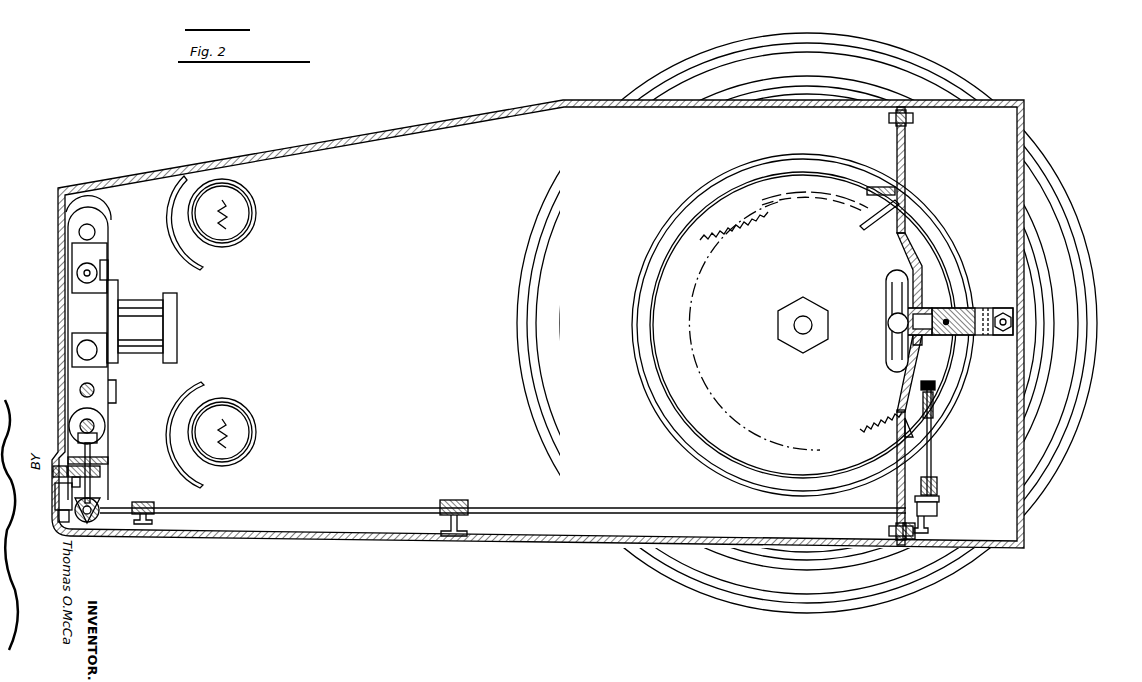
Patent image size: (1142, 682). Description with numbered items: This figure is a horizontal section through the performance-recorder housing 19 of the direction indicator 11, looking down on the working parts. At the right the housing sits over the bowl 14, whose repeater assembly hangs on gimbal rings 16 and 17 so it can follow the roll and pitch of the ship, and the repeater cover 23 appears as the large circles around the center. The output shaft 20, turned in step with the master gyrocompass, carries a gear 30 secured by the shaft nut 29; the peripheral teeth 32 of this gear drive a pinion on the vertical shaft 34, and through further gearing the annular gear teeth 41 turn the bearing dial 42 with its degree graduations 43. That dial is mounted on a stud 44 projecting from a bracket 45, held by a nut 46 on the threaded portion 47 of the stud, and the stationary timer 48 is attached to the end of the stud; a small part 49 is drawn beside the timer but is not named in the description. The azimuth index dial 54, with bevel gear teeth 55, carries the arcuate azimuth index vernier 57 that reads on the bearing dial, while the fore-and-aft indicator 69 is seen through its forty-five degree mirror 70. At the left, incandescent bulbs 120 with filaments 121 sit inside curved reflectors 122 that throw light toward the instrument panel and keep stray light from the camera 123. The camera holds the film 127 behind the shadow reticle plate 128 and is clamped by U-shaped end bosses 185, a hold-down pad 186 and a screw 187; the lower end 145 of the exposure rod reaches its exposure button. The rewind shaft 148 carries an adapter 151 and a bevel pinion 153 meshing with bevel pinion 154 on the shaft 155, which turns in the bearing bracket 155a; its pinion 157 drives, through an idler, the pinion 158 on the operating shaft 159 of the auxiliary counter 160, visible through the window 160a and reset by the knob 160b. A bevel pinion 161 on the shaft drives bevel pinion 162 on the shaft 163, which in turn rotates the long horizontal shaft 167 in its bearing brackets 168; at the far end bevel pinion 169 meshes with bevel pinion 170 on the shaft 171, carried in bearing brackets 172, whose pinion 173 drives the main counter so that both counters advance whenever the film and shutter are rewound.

The direction indicator 11 is at (662, 568).
The bowl 14 is at (733, 604).
The gimbal ring 16 is at (1085, 312).
The gimbal ring 17 is at (1030, 383).
The performance-recorder housing 19 is at (1024, 138).
The output shaft 20 is at (806, 322).
The repeater cover 23 is at (740, 470).
The shaft nut 29 is at (784, 305).
The gear 30 is at (818, 437).
The peripheral teeth 32 is at (874, 437).
The vertical shaft 34 is at (928, 326).
The annular gear teeth 41 is at (908, 236).
The bearing dial 42 is at (895, 405).
The graduations 43 is at (897, 248).
The stud 44 is at (998, 306).
The bracket 45 is at (920, 322).
The nut 46 is at (923, 334).
The threaded portion 47 is at (925, 305).
The timer 48 is at (884, 350).
The pivot pin 49 is at (888, 326).
The azimuth index dial 54 is at (896, 227).
The bevel gear teeth 55 is at (914, 432).
The arcuate azimuth index vernier 57 is at (893, 427).
The fore-and-aft indicator 69 is at (880, 187).
The forty-five degree mirror 70 is at (868, 225).
The incandescent bulbs 120 is at (257, 215).
The filaments 121 is at (228, 206).
The curved reflectors 122 is at (177, 190).
The photographic camera 123 is at (89, 205).
The film 127 is at (60, 250).
The shadow reticle plate 128 is at (72, 347).
The lower end of exposure rod 145 is at (114, 390).
The rewind shaft 148 is at (85, 428).
The adapter 151 is at (96, 426).
The bevel pinion 153 is at (102, 418).
The bevel pinion 154 is at (100, 435).
The shaft 155 is at (92, 452).
The bearing bracket 155a is at (110, 460).
The pinion 157 is at (102, 471).
The pinion 158 is at (57, 466).
The operating shaft 159 is at (53, 471).
The auxiliary counter 160 is at (57, 497).
The window 160a is at (72, 481).
The resetting knob 160b is at (72, 526).
The bevel pinion 161 is at (96, 504).
The bevel pinion 162 is at (99, 510).
The shaft 163 is at (96, 518).
The horizontal shaft 167 is at (603, 508).
The bearing brackets 168 is at (156, 506).
The bevel pinion 169 is at (938, 514).
The bevel pinion 170 is at (940, 500).
The shaft 171 is at (933, 456).
The bearing brackets 172 is at (935, 396).
The pinion 173 is at (936, 377).
The U-shaped end bosses 185 is at (106, 218).
The hold-down pad 186 is at (108, 288).
The screw 187 is at (92, 273).